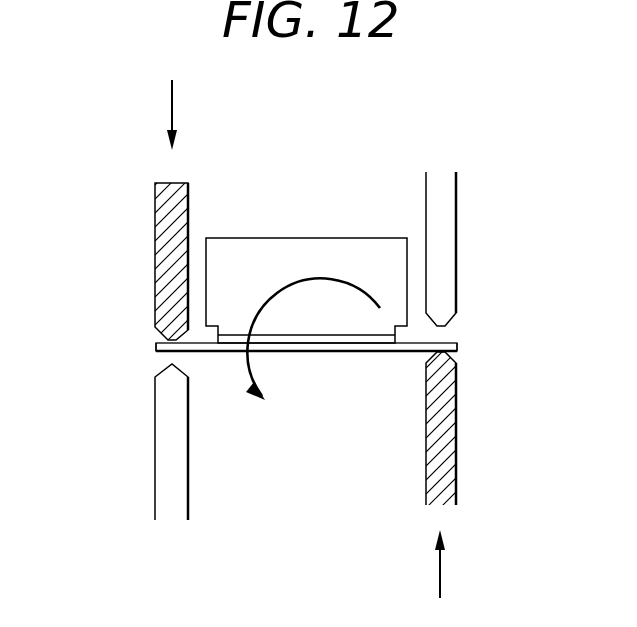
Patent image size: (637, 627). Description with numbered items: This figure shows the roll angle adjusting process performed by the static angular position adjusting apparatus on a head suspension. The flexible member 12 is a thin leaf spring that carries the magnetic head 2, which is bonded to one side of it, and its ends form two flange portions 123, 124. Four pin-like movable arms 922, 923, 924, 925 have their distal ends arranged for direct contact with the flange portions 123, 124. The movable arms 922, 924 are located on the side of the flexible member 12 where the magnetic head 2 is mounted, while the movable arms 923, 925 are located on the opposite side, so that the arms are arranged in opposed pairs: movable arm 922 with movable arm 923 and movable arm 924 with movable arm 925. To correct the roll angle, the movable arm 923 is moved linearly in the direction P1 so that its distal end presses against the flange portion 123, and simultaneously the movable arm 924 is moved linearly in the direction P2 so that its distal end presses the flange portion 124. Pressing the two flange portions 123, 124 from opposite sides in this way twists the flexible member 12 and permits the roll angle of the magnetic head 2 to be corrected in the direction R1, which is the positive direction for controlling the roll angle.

The magnetic head 2 is at (276, 244).
The roll angle correction direction R1 is at (347, 277).
The flexible member 12 is at (336, 360).
The flange portion 123 is at (458, 344).
The flange portion 124 is at (156, 345).
The movable arm 922 is at (450, 248).
The movable arm 923 is at (446, 441).
The movable arm 924 is at (162, 260).
The movable arm 925 is at (170, 456).
The movement direction of movable arm 923 P1 is at (440, 567).
The movement direction of movable arm 924 P2 is at (172, 105).